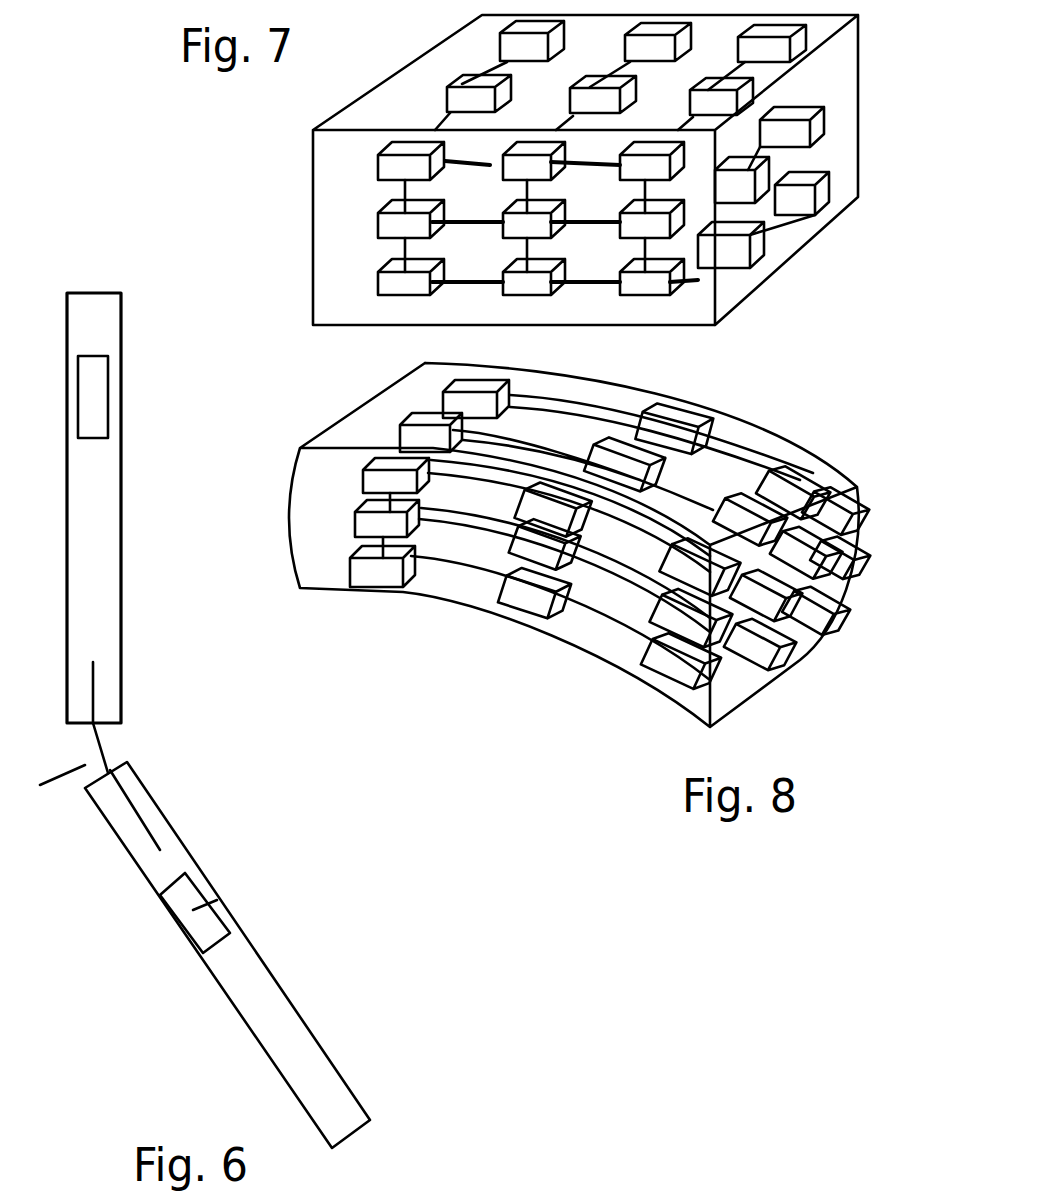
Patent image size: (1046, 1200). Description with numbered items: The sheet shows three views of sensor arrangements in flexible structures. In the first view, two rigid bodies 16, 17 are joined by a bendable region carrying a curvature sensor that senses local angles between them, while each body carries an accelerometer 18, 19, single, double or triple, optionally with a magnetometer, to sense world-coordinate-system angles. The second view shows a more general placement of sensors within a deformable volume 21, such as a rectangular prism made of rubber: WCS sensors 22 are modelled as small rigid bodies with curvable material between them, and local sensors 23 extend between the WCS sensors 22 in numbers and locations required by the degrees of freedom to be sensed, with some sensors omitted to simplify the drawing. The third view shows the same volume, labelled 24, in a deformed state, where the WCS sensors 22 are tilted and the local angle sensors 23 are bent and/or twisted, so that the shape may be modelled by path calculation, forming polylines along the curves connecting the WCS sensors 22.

In FIG. 6, the rigid body 16 is at (128, 573).
In FIG. 6, the rigid body 17 is at (305, 997).
In FIG. 6, the accelerometer 18 is at (93, 397).
In FIG. 6, the accelerometer 19 is at (213, 897).
In FIG. 7, the deformable volume 21 is at (797, 258).
In FIG. 7, the WCS sensor 22 is at (368, 162).
In FIG. 8, the WCS sensor 22 is at (370, 587).
In FIG. 7, the local sensor 23 is at (377, 240).
In FIG. 8, the local sensor 23 is at (453, 585).
In FIG. 8, the curved antenna block 24 is at (577, 660).